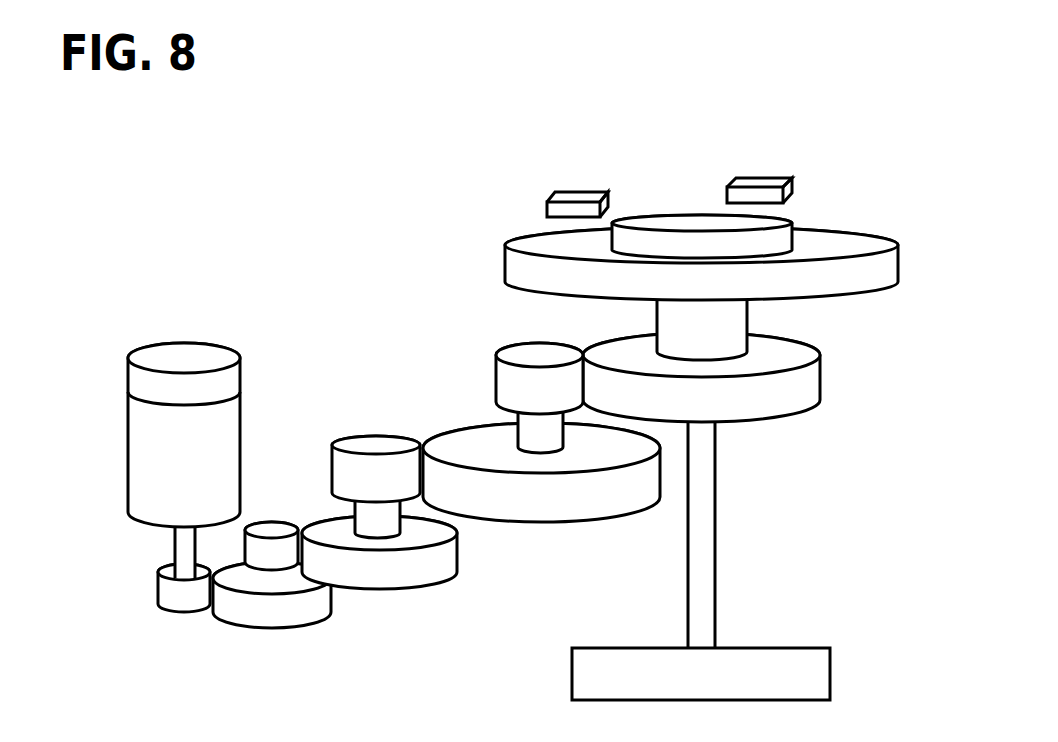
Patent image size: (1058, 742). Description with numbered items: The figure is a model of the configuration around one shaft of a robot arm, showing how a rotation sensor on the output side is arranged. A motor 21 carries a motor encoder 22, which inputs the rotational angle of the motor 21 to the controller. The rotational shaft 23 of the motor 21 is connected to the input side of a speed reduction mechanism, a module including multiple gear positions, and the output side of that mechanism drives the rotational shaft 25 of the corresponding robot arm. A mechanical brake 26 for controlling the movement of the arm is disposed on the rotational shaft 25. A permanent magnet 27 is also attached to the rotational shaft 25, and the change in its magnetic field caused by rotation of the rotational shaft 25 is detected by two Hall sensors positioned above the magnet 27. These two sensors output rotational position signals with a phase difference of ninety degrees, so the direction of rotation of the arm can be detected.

The motor 21 is at (128, 432).
The motor encoder 22 is at (187, 352).
The rotational shaft of the motor 23 is at (175, 543).
The rotational shaft of the robot arm 25 is at (748, 315).
The mechanical brake 26 is at (832, 678).
The permanent magnet 27 is at (873, 233).